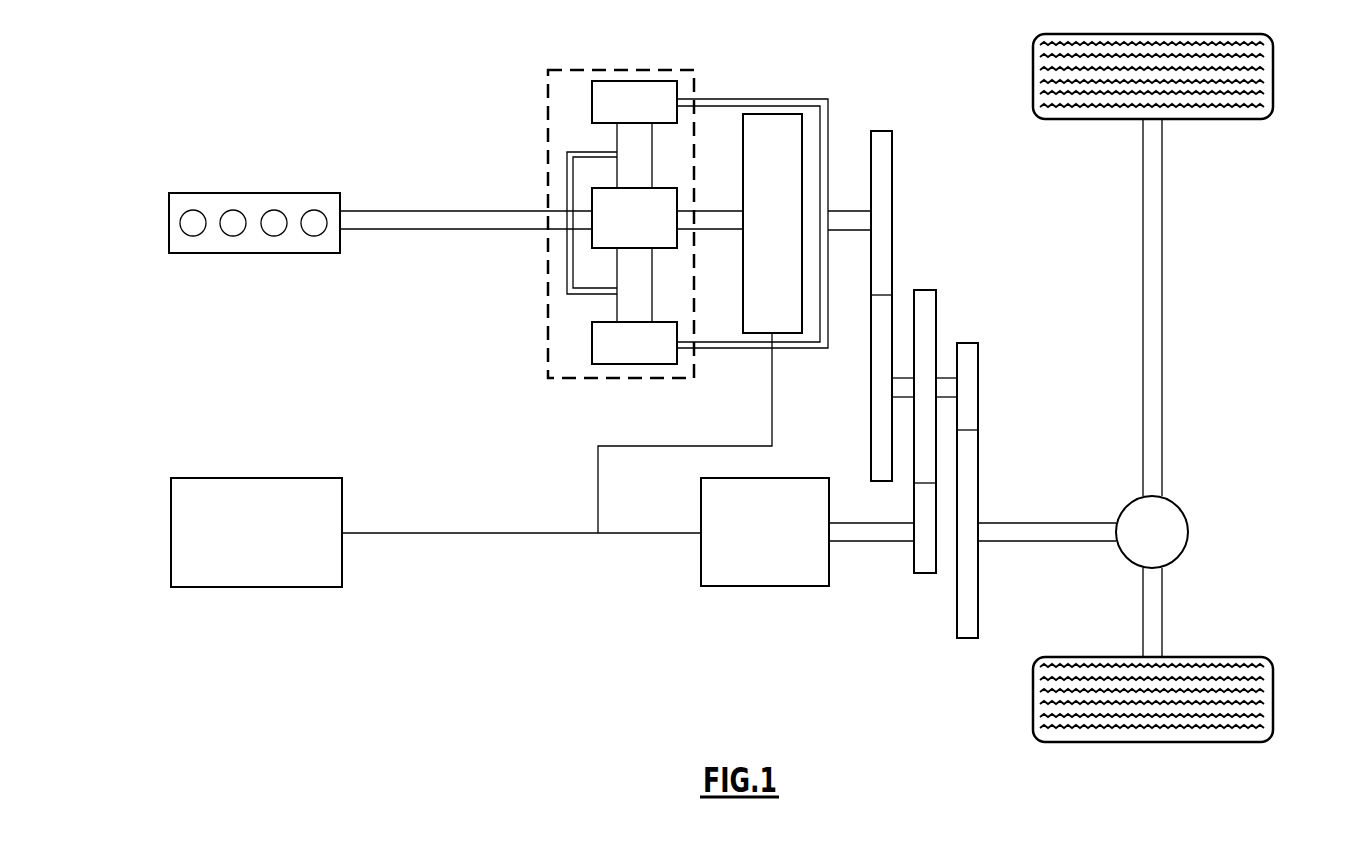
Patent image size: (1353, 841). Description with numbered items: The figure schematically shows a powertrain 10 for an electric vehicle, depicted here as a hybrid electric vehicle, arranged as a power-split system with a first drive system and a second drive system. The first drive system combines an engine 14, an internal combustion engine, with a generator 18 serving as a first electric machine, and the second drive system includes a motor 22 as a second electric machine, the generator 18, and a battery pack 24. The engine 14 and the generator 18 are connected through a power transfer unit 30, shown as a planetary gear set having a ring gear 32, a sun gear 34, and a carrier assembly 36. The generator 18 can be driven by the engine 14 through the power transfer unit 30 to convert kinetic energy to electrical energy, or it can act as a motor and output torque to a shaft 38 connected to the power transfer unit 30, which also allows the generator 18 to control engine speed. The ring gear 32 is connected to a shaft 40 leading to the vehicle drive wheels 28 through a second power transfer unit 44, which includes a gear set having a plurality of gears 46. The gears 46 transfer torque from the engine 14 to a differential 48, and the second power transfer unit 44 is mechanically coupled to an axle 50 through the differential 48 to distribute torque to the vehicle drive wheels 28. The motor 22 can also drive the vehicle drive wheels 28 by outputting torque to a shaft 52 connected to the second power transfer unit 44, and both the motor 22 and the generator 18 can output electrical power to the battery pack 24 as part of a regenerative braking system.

The powertrain 10 is at (392, 90).
The engine 14 is at (186, 193).
The generator 18 is at (753, 114).
The motor 22 is at (830, 572).
The battery pack 24 is at (190, 478).
The vehicle drive wheels 28 is at (1273, 698).
The power transfer unit 30 is at (547, 342).
The ring gear 32 is at (592, 98).
The sun gear 34 is at (591, 193).
The carrier assembly 36 is at (567, 280).
The shaft 38 is at (713, 211).
The shaft 40 is at (848, 211).
The second power transfer unit 44 is at (962, 252).
The gears 46 is at (936, 312).
The differential 48 is at (1186, 553).
The axle 50 is at (1163, 297).
The shaft 52 is at (883, 542).